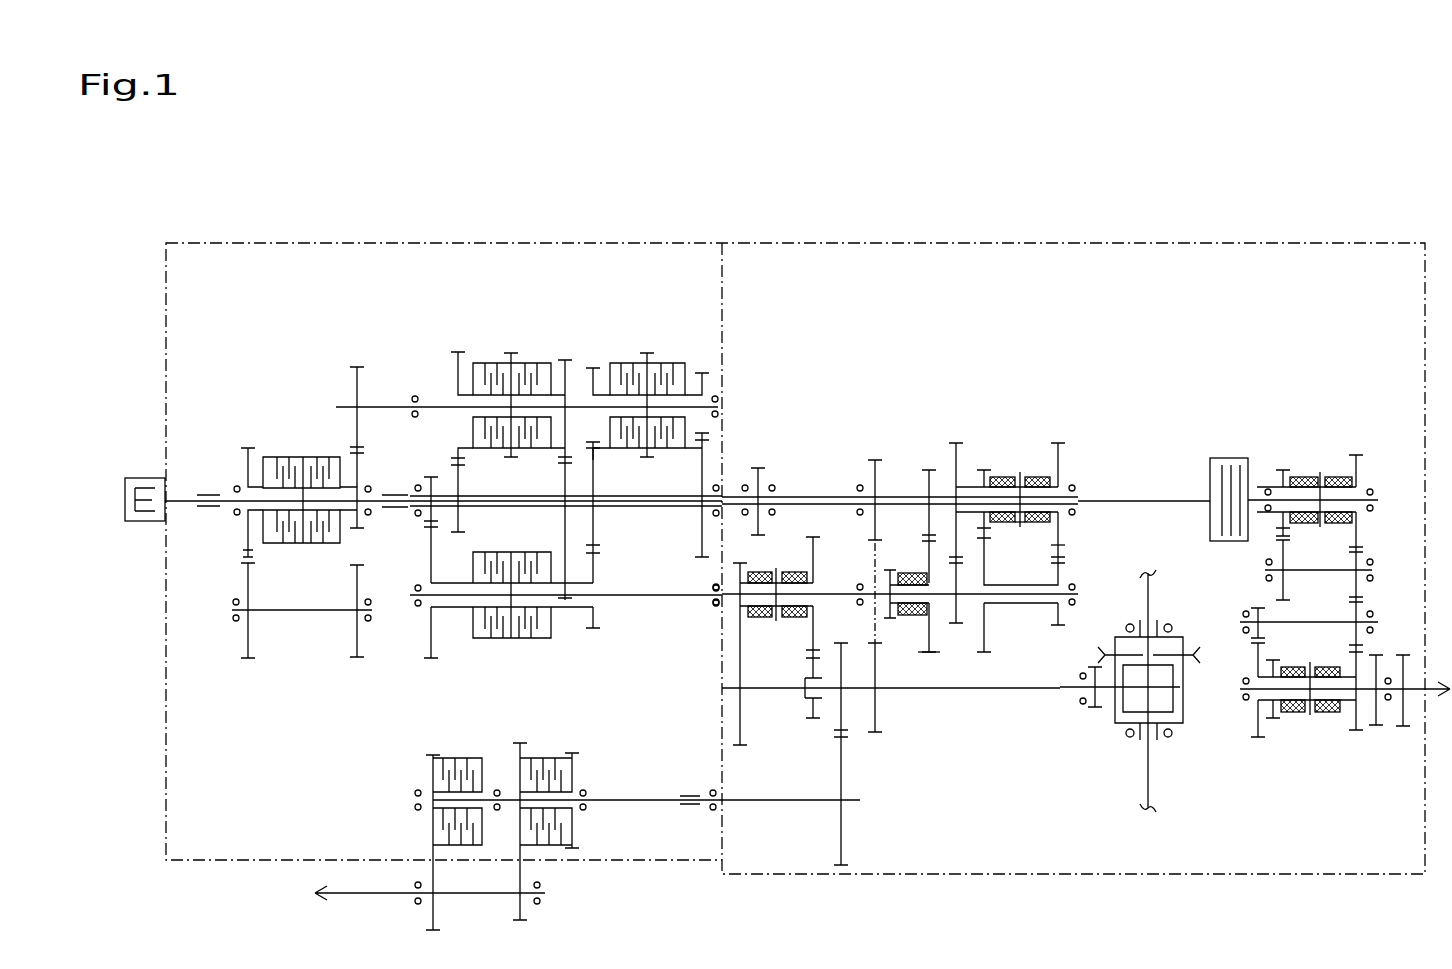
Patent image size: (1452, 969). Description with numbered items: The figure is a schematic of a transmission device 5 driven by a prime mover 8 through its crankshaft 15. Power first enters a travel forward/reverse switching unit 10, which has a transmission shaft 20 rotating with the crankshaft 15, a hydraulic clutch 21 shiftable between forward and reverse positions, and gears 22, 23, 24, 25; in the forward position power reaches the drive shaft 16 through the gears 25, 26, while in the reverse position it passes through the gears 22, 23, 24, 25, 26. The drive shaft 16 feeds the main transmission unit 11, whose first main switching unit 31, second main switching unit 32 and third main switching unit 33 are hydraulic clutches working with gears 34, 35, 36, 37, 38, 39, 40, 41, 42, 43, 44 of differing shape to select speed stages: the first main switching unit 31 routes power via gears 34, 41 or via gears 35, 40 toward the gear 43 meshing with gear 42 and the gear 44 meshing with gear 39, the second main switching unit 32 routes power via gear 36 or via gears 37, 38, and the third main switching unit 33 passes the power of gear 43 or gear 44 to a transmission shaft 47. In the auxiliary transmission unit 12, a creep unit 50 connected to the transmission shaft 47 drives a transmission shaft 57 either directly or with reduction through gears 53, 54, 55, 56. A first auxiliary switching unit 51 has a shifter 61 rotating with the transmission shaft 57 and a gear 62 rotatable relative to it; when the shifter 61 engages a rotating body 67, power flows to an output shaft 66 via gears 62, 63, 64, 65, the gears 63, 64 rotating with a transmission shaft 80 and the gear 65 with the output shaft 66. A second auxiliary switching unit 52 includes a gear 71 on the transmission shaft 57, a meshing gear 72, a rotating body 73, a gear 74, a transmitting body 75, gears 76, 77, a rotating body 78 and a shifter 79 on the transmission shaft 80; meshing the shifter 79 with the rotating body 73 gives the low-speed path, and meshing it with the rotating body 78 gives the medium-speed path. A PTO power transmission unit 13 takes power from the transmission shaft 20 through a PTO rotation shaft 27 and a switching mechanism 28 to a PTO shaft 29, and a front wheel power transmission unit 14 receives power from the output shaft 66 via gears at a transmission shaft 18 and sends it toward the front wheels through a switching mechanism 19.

The transmission device 5 is at (1290, 211).
The prime mover 8 is at (148, 478).
The crankshaft 15 is at (190, 495).
The travel forward/reverse switching unit 10 is at (313, 462).
The hydraulic clutch 21 is at (312, 444).
The gear 22 is at (252, 455).
The transmission shaft 20 is at (250, 505).
The drive shaft 16 is at (393, 405).
The gear 26 is at (360, 420).
The gear 25 is at (358, 530).
The gear 23 is at (250, 640).
The gear 24 is at (356, 640).
The gear 42 is at (432, 485).
The gear 43 is at (430, 640).
The gear 34 is at (458, 353).
The gear 41 is at (460, 518).
The gear 40 is at (560, 476).
The main transmission unit 11 is at (619, 399).
The first main switching unit 31 is at (547, 346).
The second main switching unit 32 is at (633, 346).
The gear 35 is at (570, 370).
The gear 36 is at (600, 365).
The gear 37 is at (706, 378).
The gear 38 is at (706, 438).
The gear 39 is at (596, 478).
The gear 44 is at (596, 568).
The third main switching unit 33 is at (545, 658).
The transmission shaft 47 is at (640, 598).
The transmission shaft 80 is at (858, 507).
The gear 53 is at (728, 612).
The gear 54 is at (735, 712).
The creep unit 50 is at (786, 558).
The transmission shaft 57 is at (836, 595).
The gear 56 is at (845, 627).
The gear 55 is at (810, 712).
The output shaft 66 is at (1058, 700).
The gear 64 is at (878, 468).
The gear 65 is at (878, 738).
The gear 63 is at (930, 480).
The shifter 61 is at (893, 628).
The rotating body 67 is at (898, 578).
The gear 62 is at (928, 638).
The first auxiliary switching unit 51 is at (938, 668).
The gear 72 is at (960, 453).
The gear 71 is at (960, 615).
The auxiliary transmission unit 12 is at (1050, 459).
The shifter 79 is at (1020, 468).
The gear 74 is at (988, 475).
The second auxiliary switching unit 52 is at (1068, 451).
The rotating body 73 is at (1010, 518).
The rotating body 78 is at (1032, 520).
The gear 77 is at (1058, 545).
The transmitting body 75 is at (1022, 626).
The gear 76 is at (1062, 622).
The PTO rotation shaft 27 is at (1172, 500).
The PTO power transmission unit 13 is at (1320, 430).
The switching mechanism 28 is at (1369, 472).
The PTO shaft 29 is at (1418, 700).
The transmission shaft 18 is at (780, 803).
The switching mechanism 19 is at (581, 760).
The front wheel power transmission unit 14 is at (565, 880).